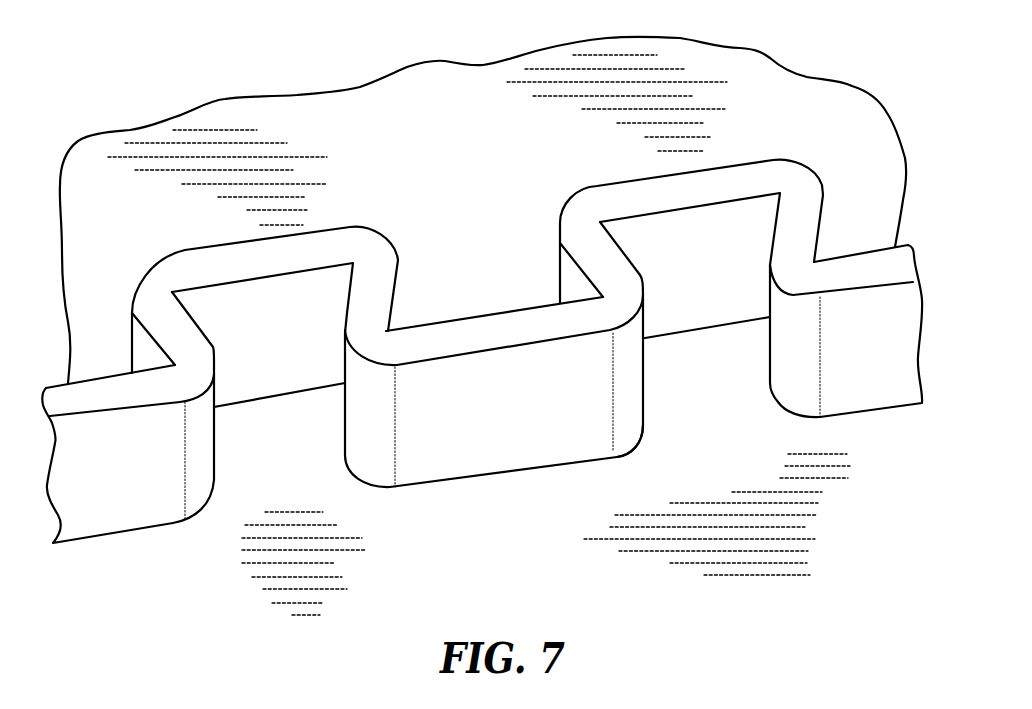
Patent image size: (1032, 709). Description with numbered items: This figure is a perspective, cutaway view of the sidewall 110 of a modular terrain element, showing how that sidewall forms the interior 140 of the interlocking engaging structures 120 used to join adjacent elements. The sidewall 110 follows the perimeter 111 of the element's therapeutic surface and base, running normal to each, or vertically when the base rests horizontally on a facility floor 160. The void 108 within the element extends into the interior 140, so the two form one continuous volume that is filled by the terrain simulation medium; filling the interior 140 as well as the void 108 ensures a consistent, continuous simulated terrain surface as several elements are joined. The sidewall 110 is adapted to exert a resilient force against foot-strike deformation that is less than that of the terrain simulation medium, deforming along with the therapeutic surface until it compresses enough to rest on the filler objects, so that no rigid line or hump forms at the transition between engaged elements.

The void 108 is at (442, 163).
The interior 140 is at (120, 370).
The sidewall 110 is at (298, 346).
The interlocking engaging structures 120 is at (658, 445).
The perimeter 111 is at (647, 409).
The facility floor 160 is at (308, 500).